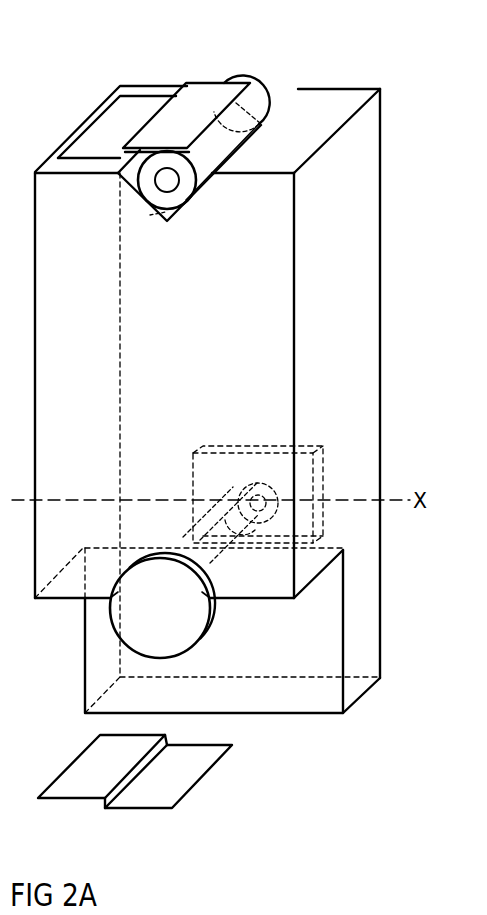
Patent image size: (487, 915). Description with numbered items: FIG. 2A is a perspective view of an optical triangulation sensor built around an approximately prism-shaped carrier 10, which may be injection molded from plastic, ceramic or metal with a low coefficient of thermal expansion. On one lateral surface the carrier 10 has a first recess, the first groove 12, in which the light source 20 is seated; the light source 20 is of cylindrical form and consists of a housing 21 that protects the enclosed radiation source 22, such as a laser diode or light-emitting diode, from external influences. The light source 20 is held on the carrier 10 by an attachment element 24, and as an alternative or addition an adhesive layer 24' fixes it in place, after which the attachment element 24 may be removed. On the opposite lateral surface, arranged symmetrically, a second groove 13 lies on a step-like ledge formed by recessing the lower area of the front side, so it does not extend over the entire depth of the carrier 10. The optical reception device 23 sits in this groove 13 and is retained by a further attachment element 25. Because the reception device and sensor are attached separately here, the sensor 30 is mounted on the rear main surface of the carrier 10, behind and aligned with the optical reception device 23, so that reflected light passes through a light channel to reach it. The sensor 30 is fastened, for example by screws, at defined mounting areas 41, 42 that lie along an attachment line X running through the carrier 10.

The carrier 10 is at (368, 292).
The first groove 12 is at (171, 224).
The groove 13 is at (163, 552).
The light source 20 is at (300, 151).
The housing 21 is at (213, 155).
The radiation source 22 is at (179, 180).
The optical reception device 23 is at (132, 610).
The attachment element 24 is at (111, 100).
The adhesive layer 24' is at (116, 200).
The attachment element 25 is at (183, 767).
The sensor 30 is at (305, 520).
The mounting area 41 is at (287, 500).
The mounting area 42 is at (218, 497).